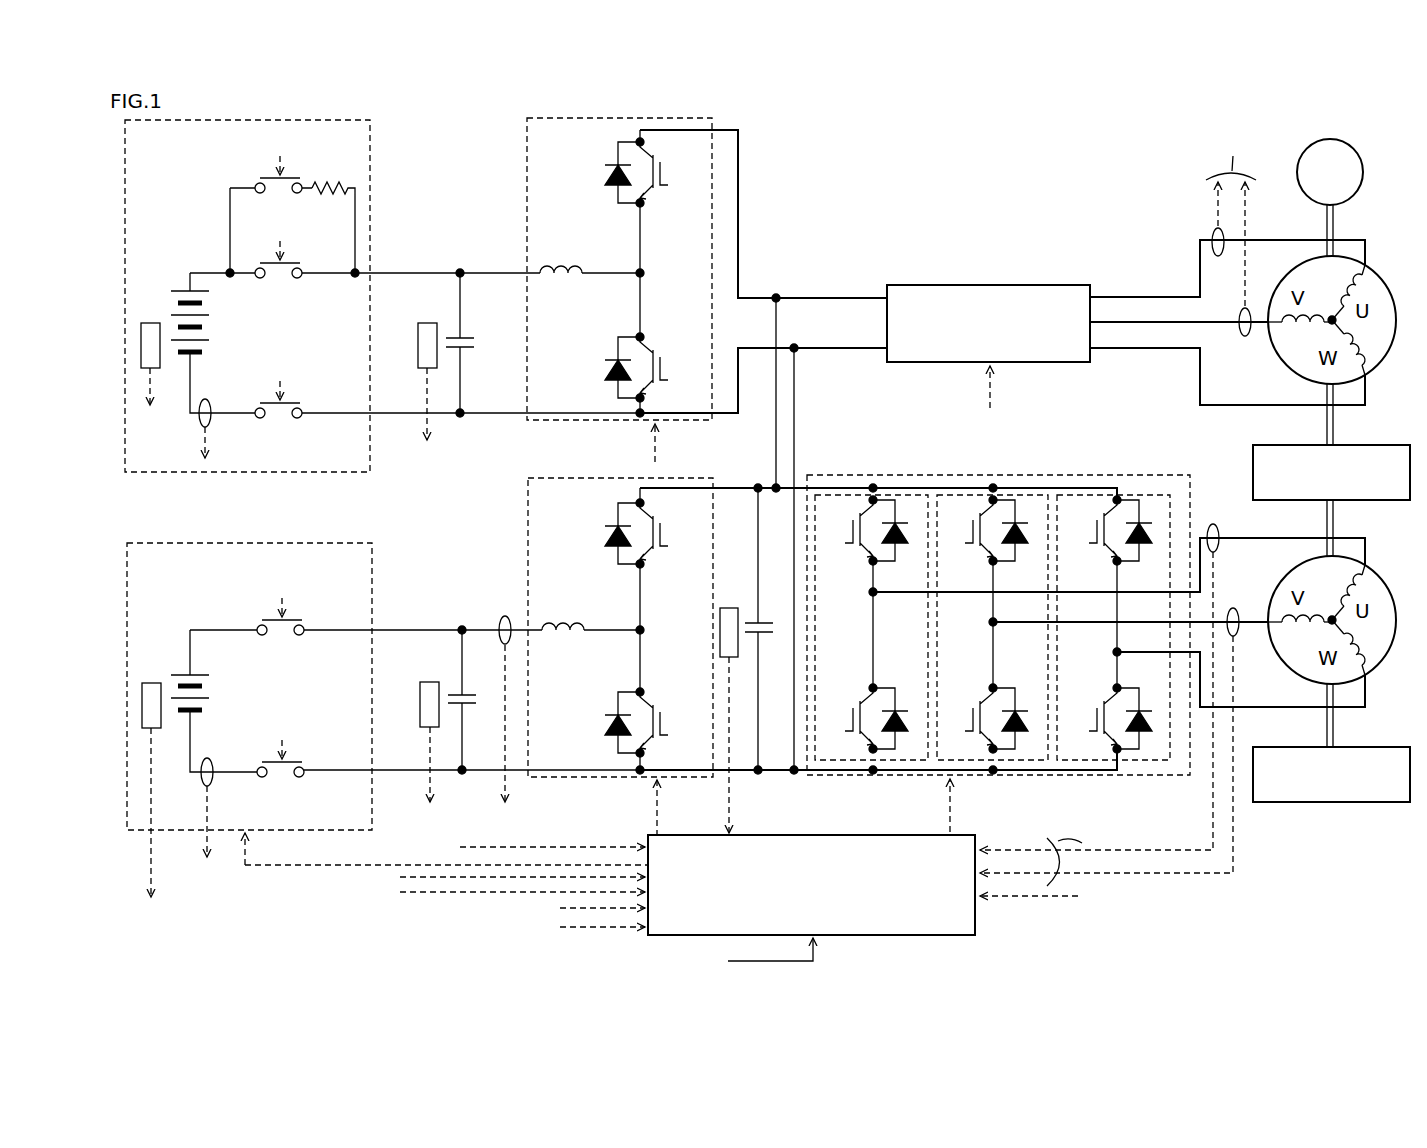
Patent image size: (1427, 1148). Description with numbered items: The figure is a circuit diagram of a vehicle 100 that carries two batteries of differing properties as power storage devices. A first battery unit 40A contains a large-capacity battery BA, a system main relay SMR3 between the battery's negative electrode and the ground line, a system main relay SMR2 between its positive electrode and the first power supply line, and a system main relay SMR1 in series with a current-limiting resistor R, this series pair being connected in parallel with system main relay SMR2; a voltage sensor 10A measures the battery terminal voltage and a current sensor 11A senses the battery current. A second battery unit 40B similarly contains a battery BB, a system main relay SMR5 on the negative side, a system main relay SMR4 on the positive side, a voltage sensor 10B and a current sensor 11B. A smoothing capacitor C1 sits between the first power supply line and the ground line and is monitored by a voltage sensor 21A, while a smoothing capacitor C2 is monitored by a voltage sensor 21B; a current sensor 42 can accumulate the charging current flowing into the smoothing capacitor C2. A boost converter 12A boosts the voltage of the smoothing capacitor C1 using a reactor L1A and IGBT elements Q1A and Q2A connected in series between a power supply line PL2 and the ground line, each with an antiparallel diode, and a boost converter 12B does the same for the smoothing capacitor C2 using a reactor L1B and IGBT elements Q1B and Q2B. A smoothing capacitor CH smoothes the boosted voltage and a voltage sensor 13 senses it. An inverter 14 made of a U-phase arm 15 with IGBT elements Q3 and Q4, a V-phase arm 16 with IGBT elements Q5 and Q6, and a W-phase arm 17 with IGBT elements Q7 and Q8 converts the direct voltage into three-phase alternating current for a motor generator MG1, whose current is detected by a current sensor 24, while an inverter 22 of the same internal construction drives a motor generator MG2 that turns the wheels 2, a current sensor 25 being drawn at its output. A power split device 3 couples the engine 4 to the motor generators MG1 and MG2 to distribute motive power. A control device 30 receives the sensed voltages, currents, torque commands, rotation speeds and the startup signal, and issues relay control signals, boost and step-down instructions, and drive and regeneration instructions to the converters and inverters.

The vehicle 100 is at (1006, 152).
The wheels 2 is at (1364, 172).
The power split device 3 is at (1383, 446).
The engine 4 is at (1383, 748).
The voltage sensor 10A is at (150, 323).
The voltage sensor 10B is at (151, 683).
The current sensor 11A is at (207, 400).
The current sensor 11B is at (209, 758).
The boost converter 12A is at (526, 144).
The boost converter 12B is at (527, 505).
The voltage sensor 13 is at (729, 608).
The inverter 14 is at (838, 475).
The U-phase arm 15 is at (905, 494).
The V-phase arm 16 is at (1027, 494).
The W-phase arm 17 is at (1148, 494).
The voltage sensor 21A is at (427, 323).
The voltage sensor 21B is at (430, 682).
The inverter 22 is at (1056, 286).
The current sensor 24 is at (1213, 524).
The current sensor for MG2 25 is at (1218, 258).
The control device 30 is at (910, 936).
The battery unit 40A is at (372, 140).
The battery unit 40B is at (373, 563).
The current sensor 42 is at (505, 616).
The battery BA is at (190, 273).
The battery BB is at (190, 630).
The motor generator MG1 is at (1370, 570).
The motor generator MG2 is at (1370, 270).
The smoothing capacitor C1 is at (470, 355).
The smoothing capacitor C2 is at (470, 712).
The smoothing capacitor CH is at (770, 640).
The reactor L1A is at (590, 254).
The reactor L1B is at (591, 611).
The current-limiting resistor R is at (340, 184).
The system main relay SMR1 is at (262, 178).
The system main relay SMR2 is at (280, 280).
The system main relay SMR3 is at (280, 420).
The system main relay SMR4 is at (282, 640).
The system main relay SMR5 is at (282, 780).
The power supply line PL2 is at (778, 332).
The IGBT element Q1A is at (636, 172).
The IGBT element Q2A is at (636, 367).
The IGBT element Q1B is at (636, 533).
The IGBT element Q2B is at (636, 722).
The IGBT element Q3 is at (870, 533).
The IGBT element Q4 is at (870, 721).
The IGBT element Q5 is at (990, 533).
The IGBT element Q6 is at (990, 721).
The IGBT element Q7 is at (1114, 533).
The IGBT element Q8 is at (1114, 721).